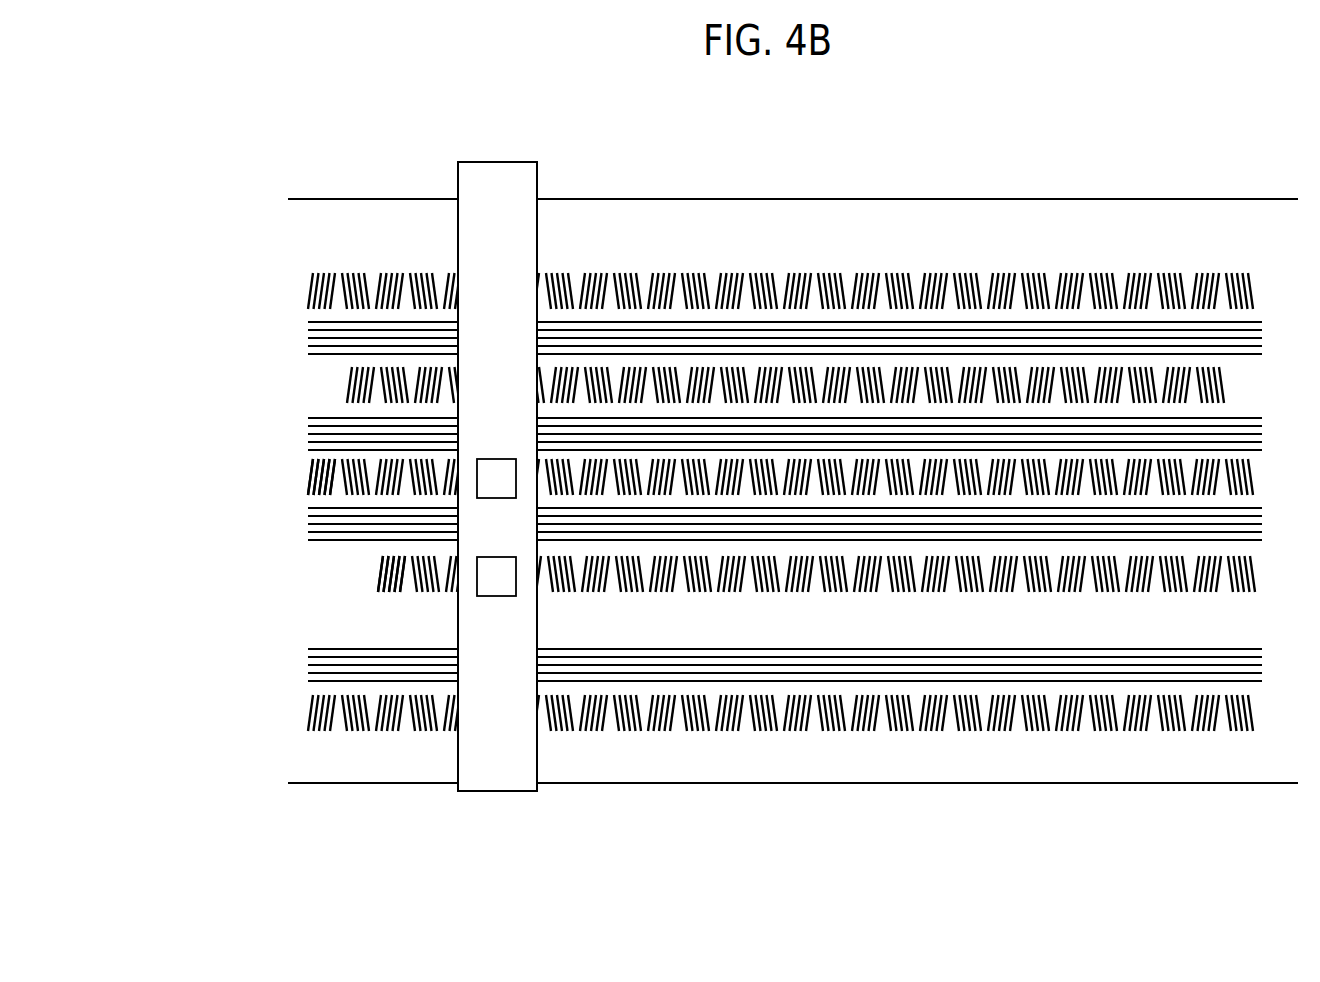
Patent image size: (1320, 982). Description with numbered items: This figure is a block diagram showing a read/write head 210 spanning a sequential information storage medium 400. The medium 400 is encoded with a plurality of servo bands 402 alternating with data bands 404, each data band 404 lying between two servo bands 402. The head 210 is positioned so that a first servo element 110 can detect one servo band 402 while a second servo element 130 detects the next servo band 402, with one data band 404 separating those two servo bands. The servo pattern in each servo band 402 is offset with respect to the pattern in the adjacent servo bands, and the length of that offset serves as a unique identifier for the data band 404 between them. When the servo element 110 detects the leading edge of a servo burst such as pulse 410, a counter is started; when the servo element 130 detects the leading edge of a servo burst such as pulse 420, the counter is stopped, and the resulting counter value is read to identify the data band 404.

The servo element 110 is at (494, 467).
The servo element 130 is at (495, 583).
The read/write head 210 is at (880, 173).
The sequential information storage medium 400 is at (733, 815).
The servo band 402 is at (670, 502).
The data band 404 is at (673, 501).
The pulse 410 is at (308, 475).
The pulse 420 is at (378, 572).